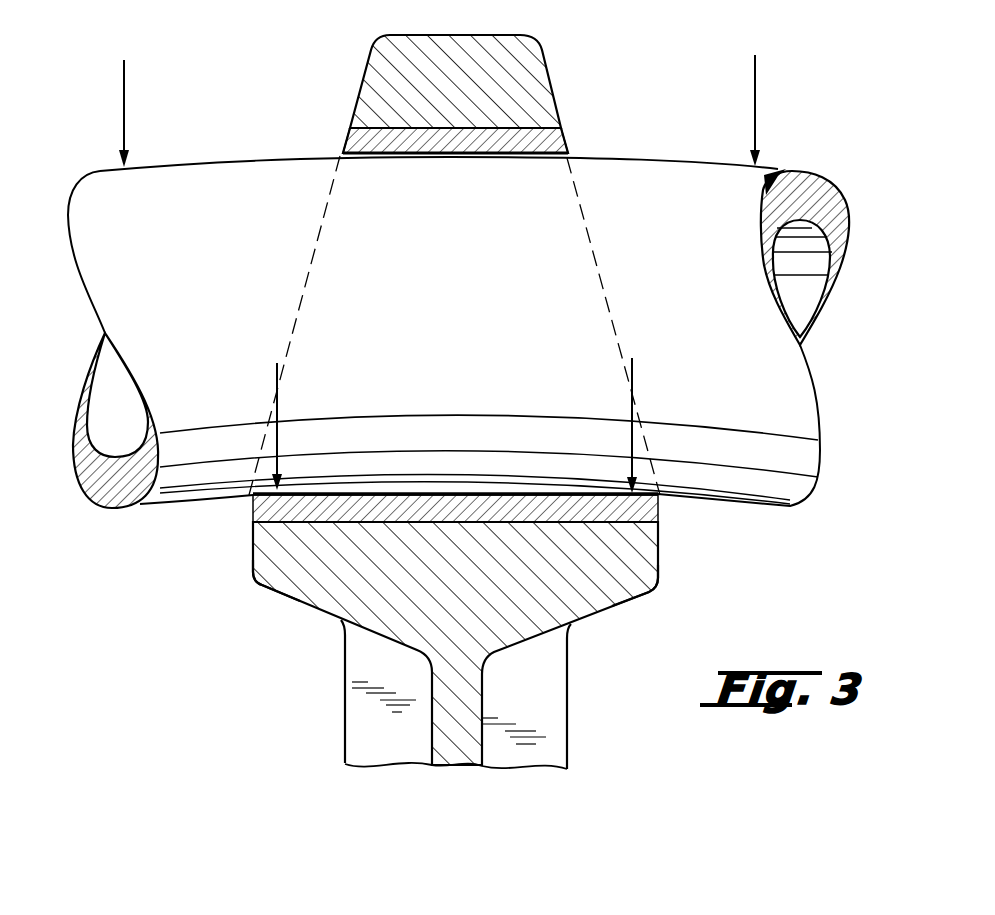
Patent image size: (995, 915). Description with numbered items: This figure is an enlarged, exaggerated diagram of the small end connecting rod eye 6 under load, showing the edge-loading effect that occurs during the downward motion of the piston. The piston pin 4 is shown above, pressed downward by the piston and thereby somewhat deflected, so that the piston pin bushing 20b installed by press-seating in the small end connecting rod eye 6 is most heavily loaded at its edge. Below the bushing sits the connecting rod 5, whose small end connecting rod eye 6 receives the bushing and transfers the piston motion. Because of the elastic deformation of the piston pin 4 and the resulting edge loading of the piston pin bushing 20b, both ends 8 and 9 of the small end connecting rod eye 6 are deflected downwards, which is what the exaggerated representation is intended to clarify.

The piston pin 4 is at (663, 170).
The small end connecting rod eye 6 is at (530, 78).
The connecting rod 5 is at (578, 723).
The end of the small end connecting rod eye 8 is at (267, 582).
The end of the small end connecting rod eye 9 is at (648, 578).
The piston pin bushing 20b is at (265, 512).